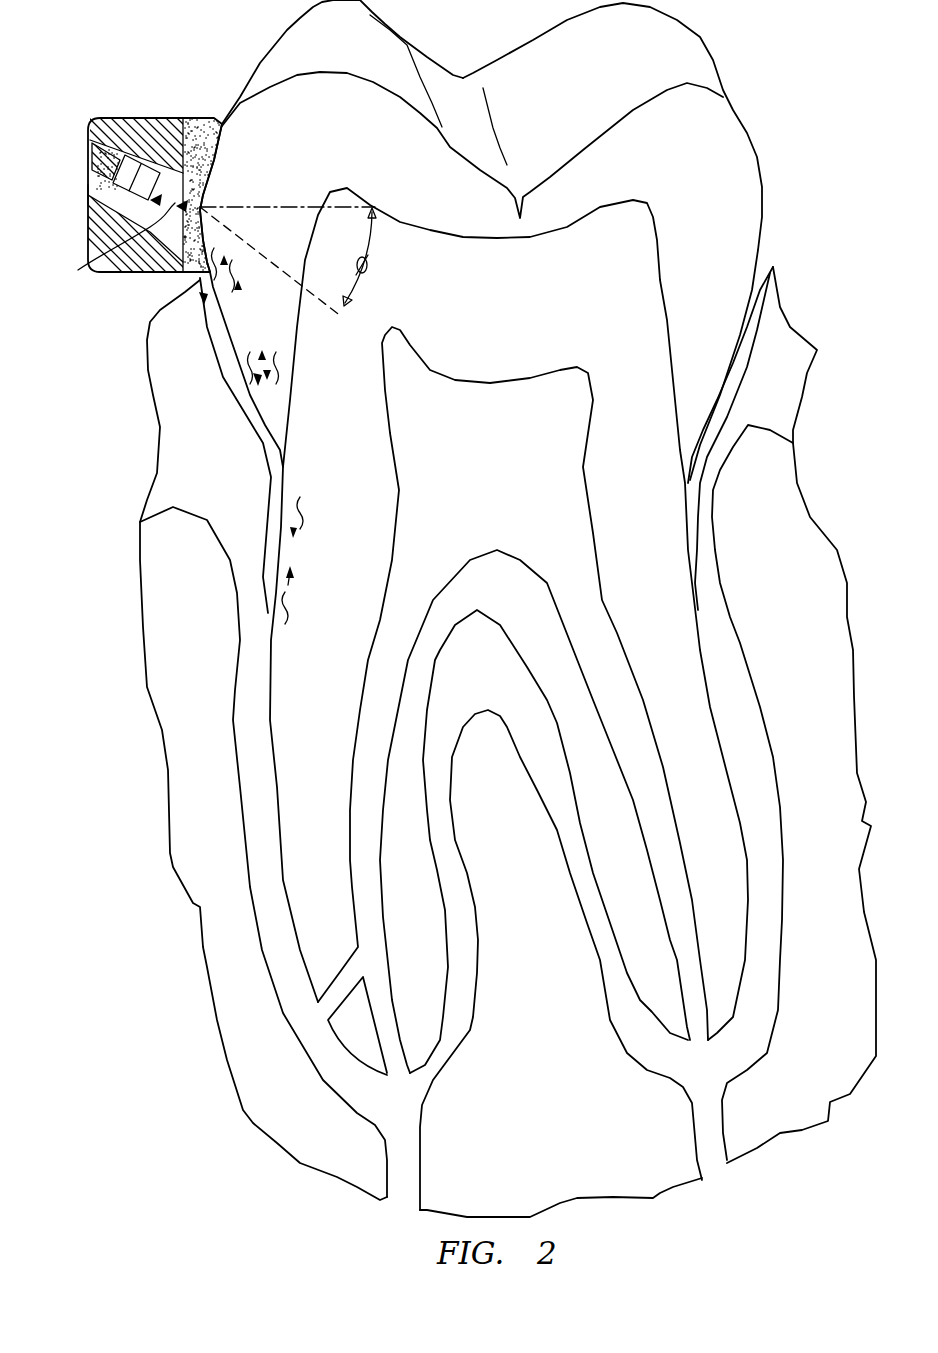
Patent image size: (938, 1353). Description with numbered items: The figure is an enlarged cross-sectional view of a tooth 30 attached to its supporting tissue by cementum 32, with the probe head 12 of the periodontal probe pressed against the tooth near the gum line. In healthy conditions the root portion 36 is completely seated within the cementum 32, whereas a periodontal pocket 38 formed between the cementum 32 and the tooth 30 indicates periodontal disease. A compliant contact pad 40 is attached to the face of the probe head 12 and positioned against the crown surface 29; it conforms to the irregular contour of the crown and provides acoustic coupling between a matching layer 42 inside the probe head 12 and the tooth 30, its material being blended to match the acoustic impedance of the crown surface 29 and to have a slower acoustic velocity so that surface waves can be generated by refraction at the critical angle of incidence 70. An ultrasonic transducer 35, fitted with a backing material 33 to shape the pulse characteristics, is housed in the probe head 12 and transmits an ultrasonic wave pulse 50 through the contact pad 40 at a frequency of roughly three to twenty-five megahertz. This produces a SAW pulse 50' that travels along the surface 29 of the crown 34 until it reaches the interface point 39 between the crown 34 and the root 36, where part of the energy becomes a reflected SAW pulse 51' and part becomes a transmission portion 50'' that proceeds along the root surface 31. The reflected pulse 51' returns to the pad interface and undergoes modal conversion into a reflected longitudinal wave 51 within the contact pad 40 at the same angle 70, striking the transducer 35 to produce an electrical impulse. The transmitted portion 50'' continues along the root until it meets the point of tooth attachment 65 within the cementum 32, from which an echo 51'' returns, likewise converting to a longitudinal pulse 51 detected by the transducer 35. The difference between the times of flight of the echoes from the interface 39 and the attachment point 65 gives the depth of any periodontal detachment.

The probe head 12 is at (143, 112).
The crown surface 29 is at (277, 43).
The tooth 30 is at (782, 220).
The root surface 31 is at (685, 540).
The cementum 32 is at (245, 775).
The backing material 33 is at (88, 190).
The crown 34 is at (702, 35).
The ultrasonic transducer 35 is at (103, 165).
The root portion 36 is at (705, 730).
The periodontal pocket 38 is at (272, 527).
The interface point 39 is at (285, 467).
The contact pad 40 is at (207, 118).
The matching layer 42 is at (100, 183).
The ultrasonic wave pulse 50 is at (203, 181).
The SAW pulse 50' is at (215, 352).
The transmission portion of the SAW pulse 50'' is at (326, 517).
The reflected longitudinal wave 51 is at (112, 252).
The reflected SAW pulse 51' is at (275, 320).
The echo of the SAW pulse 51'' is at (316, 595).
The point of tooth attachment 65 is at (270, 613).
The critical angle of incidence 70 is at (382, 272).